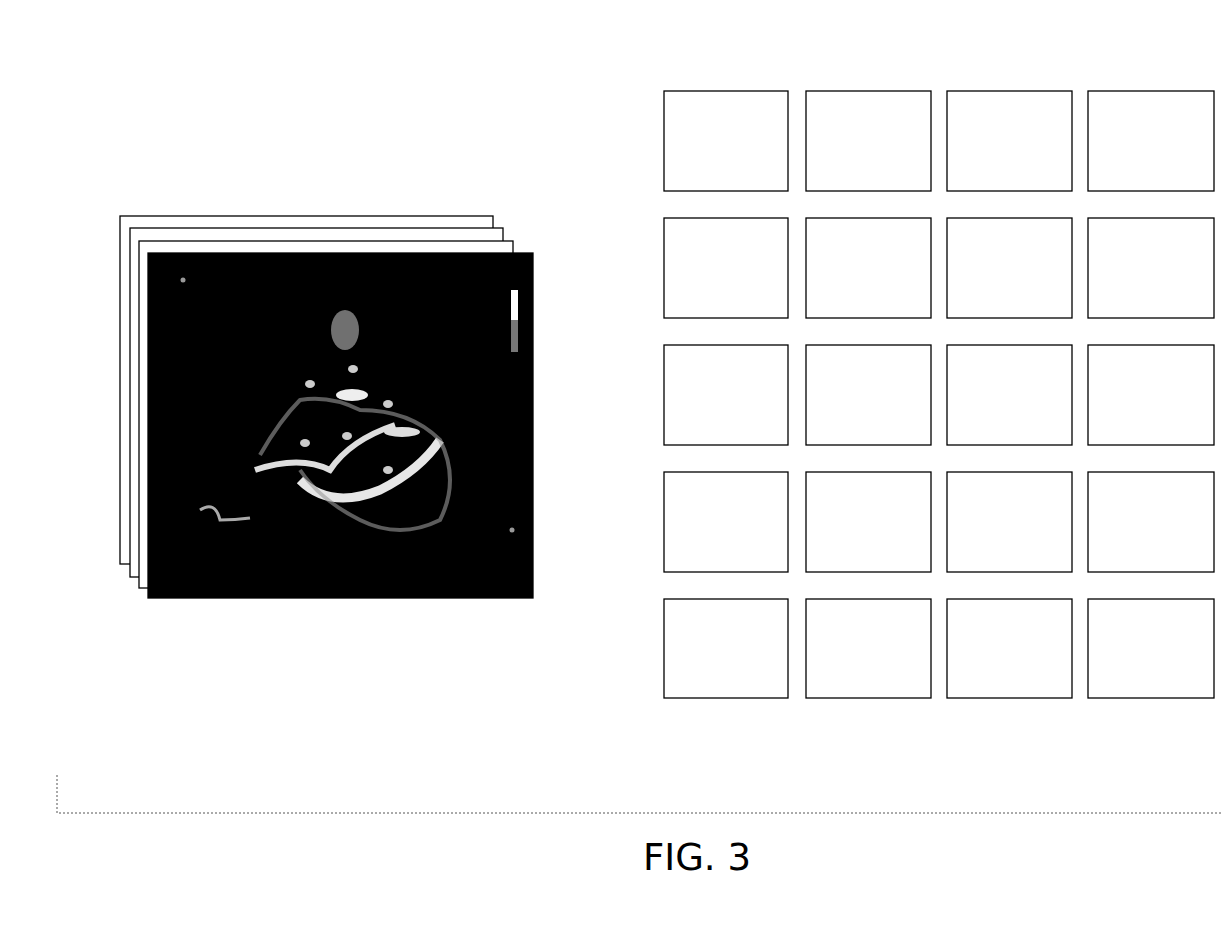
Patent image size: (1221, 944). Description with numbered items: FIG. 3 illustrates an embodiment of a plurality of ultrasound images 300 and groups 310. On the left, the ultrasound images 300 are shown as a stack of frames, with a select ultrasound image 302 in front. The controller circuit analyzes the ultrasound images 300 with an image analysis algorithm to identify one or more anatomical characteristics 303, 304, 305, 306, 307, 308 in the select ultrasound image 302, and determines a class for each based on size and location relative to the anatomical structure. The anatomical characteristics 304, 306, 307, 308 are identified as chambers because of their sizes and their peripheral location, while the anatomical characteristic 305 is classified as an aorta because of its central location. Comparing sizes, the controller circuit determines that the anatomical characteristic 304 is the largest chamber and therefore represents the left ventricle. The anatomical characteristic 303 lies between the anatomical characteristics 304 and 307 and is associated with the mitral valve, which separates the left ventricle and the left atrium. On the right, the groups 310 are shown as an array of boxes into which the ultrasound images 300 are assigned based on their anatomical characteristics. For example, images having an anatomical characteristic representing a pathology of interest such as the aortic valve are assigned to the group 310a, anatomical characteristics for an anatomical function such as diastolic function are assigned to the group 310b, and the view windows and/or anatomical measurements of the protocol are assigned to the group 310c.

The ultrasound images 300 is at (166, 186).
The select ultrasound image 302 is at (535, 501).
The anatomical characteristic 303 is at (310, 385).
The anatomical characteristic 304 is at (305, 442).
The anatomical characteristic 305 is at (347, 433).
The anatomical characteristic 306 is at (388, 467).
The anatomical characteristic 307 is at (353, 369).
The anatomical characteristic 308 is at (388, 404).
The groups 310 is at (859, 395).
The group 310a is at (868, 91).
The group 310b is at (868, 698).
The group 310c is at (1155, 698).